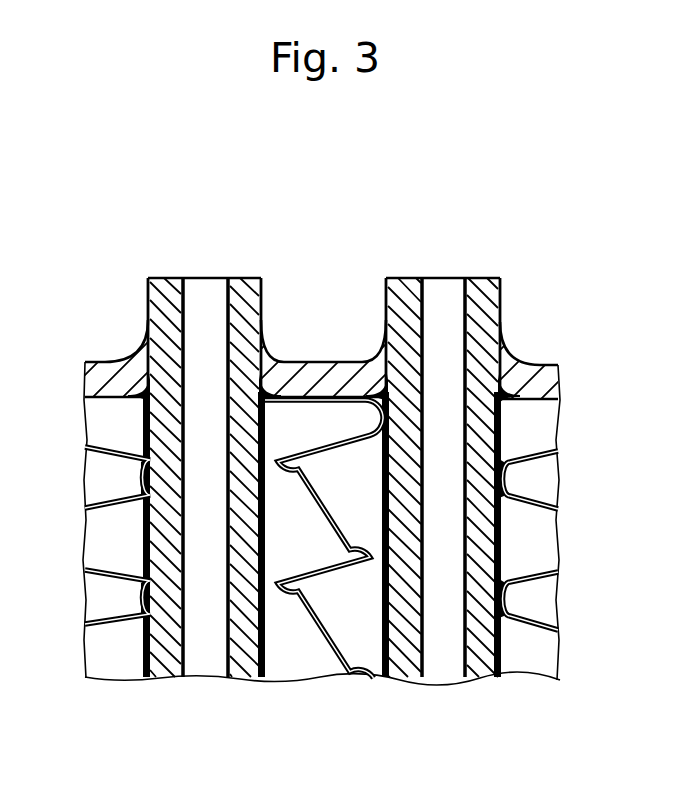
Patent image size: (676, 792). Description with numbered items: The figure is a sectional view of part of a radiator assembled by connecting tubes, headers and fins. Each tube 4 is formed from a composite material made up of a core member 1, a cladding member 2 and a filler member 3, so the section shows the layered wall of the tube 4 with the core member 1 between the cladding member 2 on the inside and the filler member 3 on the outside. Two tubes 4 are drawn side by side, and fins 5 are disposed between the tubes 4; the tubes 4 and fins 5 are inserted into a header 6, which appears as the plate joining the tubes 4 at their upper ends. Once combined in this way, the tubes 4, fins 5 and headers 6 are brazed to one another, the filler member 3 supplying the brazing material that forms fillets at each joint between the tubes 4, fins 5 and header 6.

The core member 1 is at (163, 680).
The cladding member 2 is at (180, 679).
The filler member 3 is at (148, 681).
The tube 4 is at (308, 492).
The fin 5 is at (318, 634).
The header 6 is at (330, 377).